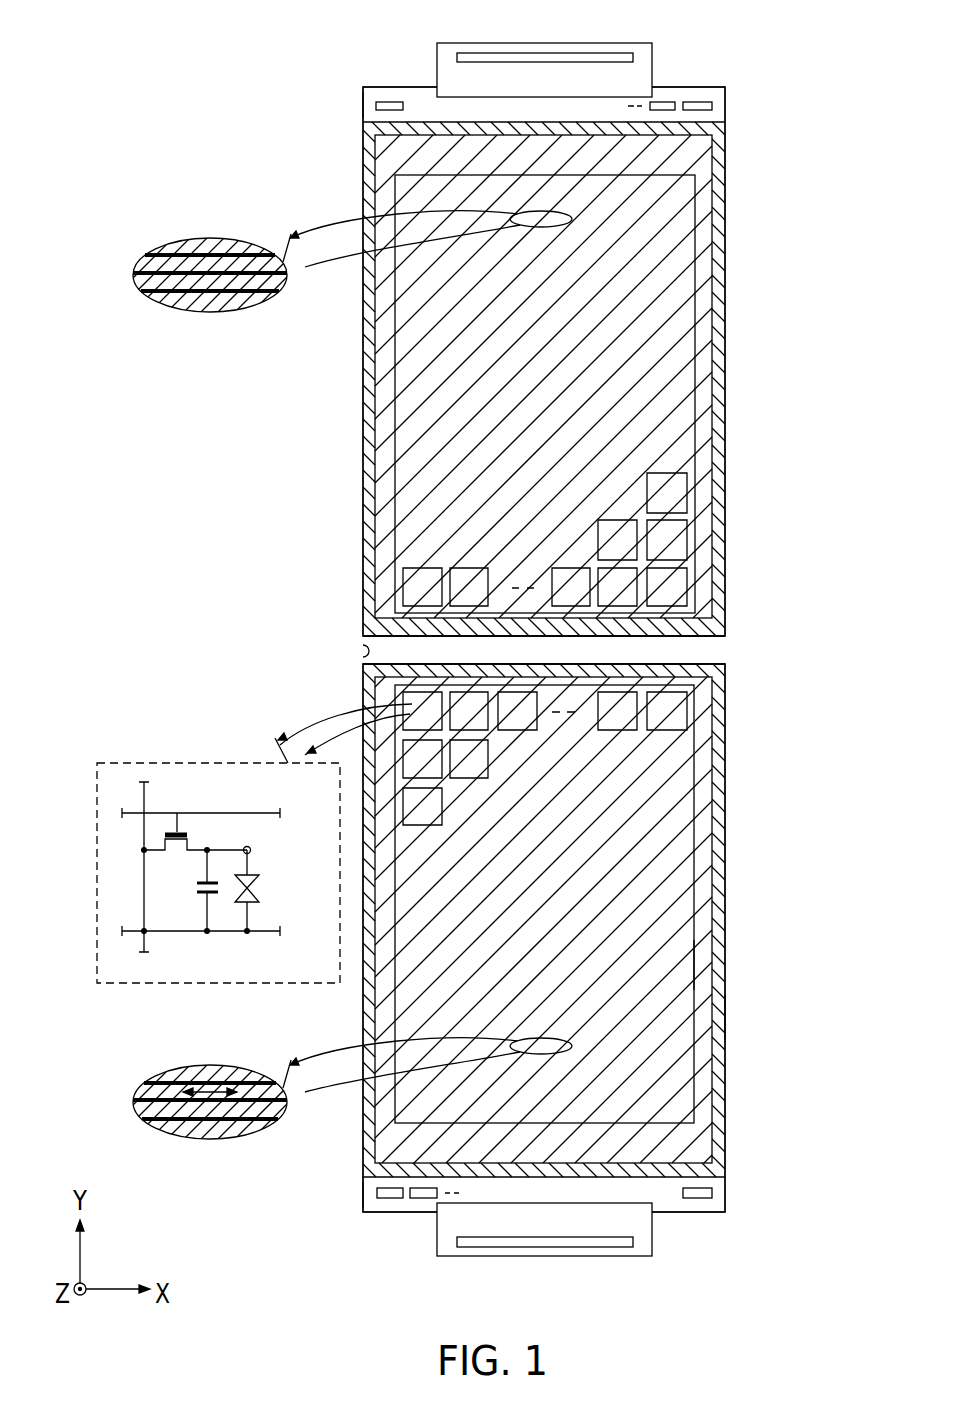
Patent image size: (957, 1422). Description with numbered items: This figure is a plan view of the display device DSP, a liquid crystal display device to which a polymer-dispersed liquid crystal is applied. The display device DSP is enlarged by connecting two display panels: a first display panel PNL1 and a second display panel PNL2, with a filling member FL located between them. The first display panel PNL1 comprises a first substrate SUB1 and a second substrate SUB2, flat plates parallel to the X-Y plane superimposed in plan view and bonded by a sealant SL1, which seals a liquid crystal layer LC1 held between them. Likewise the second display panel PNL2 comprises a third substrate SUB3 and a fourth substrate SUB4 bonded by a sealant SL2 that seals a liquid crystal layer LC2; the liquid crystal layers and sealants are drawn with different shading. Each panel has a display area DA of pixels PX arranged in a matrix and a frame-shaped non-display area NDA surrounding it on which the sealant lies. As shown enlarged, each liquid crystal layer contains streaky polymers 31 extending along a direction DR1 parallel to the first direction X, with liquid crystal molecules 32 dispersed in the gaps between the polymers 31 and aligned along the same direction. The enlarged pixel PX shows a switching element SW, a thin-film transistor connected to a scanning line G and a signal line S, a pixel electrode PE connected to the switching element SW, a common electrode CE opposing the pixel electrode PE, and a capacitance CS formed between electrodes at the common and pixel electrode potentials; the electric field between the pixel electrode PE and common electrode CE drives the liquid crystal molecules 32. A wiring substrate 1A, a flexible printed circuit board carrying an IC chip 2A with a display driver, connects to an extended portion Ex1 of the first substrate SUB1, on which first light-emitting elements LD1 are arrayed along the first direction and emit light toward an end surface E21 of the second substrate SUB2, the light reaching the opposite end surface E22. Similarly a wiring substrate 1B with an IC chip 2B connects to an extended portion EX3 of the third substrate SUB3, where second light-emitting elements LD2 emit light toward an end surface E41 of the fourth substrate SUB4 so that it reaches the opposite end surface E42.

The display device DSP is at (760, 707).
The first display panel PNL1 is at (760, 853).
The second display panel PNL2 is at (760, 393).
The first substrate SUB1 is at (710, 1203).
The second substrate SUB2 is at (718, 1168).
The third substrate SUB3 is at (720, 105).
The fourth substrate SUB4 is at (717, 148).
The liquid crystal layer LC1 is at (693, 1137).
The liquid crystal layer LC2 is at (683, 158).
The sealant SL1 is at (707, 1060).
The sealant SL2 is at (722, 277).
The filling member FL is at (722, 648).
The display area DA is at (696, 965).
The non-display area NDA is at (727, 1018).
The pixel PX is at (420, 586).
The polymers 31 is at (140, 281).
The liquid crystal molecules 32 is at (213, 292).
The extending direction DR1 is at (223, 1090).
The wiring substrate 1A is at (455, 1256).
The IC chip 2A is at (620, 1256).
The wiring substrate 1B is at (455, 43).
The IC chip 2B is at (612, 53).
The first light-emitting element LD1 is at (390, 1200).
The second light-emitting element LD2 is at (390, 100).
The end surface E21 is at (695, 1200).
The end surface E22 is at (363, 650).
The end surface E41 is at (670, 122).
The end surface E42 is at (690, 640).
The extended portion Ex1 is at (363, 1205).
The extended portion EX3 is at (363, 105).
The scanning line G is at (140, 810).
The signal line S is at (143, 880).
The switching element SW is at (202, 842).
The pixel electrode PE is at (251, 850).
The common electrode CE is at (265, 933).
The capacitance CS is at (194, 890).